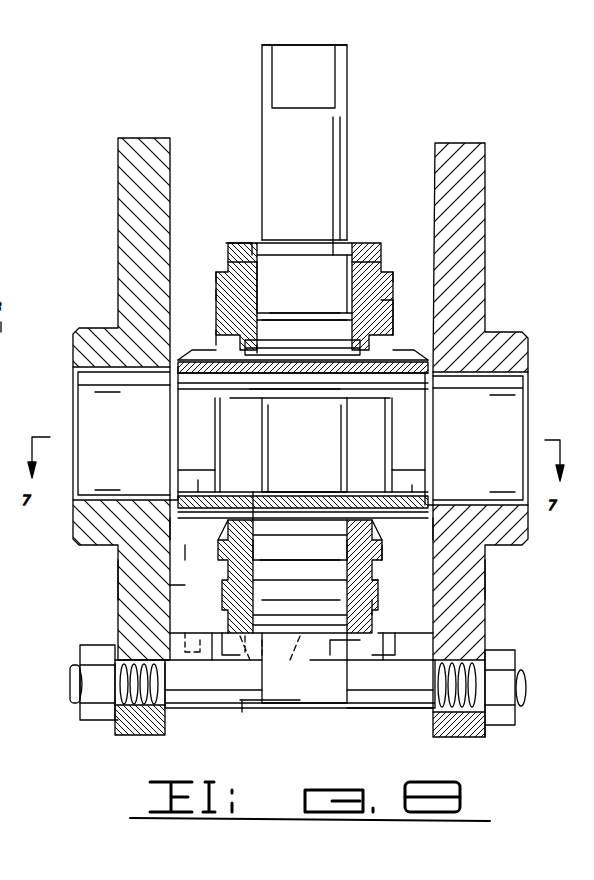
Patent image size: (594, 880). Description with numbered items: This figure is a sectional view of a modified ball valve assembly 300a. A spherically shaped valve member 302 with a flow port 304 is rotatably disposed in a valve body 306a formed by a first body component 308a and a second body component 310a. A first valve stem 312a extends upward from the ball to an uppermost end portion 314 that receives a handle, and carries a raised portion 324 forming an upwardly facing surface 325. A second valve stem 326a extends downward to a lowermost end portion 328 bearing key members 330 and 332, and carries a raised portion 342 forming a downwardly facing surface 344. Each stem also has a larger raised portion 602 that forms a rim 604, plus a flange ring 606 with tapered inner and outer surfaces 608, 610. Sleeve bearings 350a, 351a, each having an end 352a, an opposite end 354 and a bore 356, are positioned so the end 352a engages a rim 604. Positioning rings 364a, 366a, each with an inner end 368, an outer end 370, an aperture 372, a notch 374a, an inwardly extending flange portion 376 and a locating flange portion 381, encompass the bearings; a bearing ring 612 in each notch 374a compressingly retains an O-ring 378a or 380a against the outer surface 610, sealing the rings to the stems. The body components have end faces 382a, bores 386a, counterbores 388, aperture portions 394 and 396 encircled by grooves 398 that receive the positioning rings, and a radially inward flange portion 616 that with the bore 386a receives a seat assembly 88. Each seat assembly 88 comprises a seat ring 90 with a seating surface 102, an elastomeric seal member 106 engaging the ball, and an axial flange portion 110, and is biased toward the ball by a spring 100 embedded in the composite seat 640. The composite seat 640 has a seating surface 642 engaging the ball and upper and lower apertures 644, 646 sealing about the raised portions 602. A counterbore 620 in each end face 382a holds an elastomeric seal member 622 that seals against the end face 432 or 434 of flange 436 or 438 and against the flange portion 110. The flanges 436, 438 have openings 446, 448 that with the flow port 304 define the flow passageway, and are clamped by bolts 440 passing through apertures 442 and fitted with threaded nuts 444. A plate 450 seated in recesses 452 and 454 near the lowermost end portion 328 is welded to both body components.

The valve assembly 300a is at (410, 95).
The uppermost end portion 314 is at (282, 68).
The first valve stem 312a is at (262, 128).
The upper housing body 306a is at (420, 213).
The first body component 308a is at (172, 618).
The second body component 310a is at (485, 596).
The valve member 302 is at (300, 406).
The flow port 304 is at (310, 402).
The raised portion 324 is at (283, 240).
The upwardly facing surface 325 is at (325, 245).
The second valve stem 326a is at (355, 688).
The lowermost end portion 328 is at (310, 710).
The key member 330 is at (247, 712).
The key member 332 is at (325, 660).
The raised portion 342 is at (310, 600).
The downwardly facing surface 344 is at (285, 660).
The sleeve bearing 350a is at (420, 214).
The sleeve bearing 351a is at (426, 635).
The end 352a is at (225, 316).
The end 354 is at (255, 243).
The bore 356 is at (283, 245).
The positioning ring 364a is at (238, 215).
The positioning ring 366a is at (238, 656).
The inner end 368 is at (245, 492).
The outer end 370 is at (245, 243).
The aperture 372 is at (385, 278).
The notch 374a is at (385, 304).
The flange portion 376 is at (352, 243).
The O-ring 378a is at (230, 335).
The O-ring 380a is at (185, 552).
The flange portion 381 is at (222, 277).
The end face 382a is at (118, 584).
The bore 386a is at (195, 470).
The counterbore 388 is at (220, 540).
The aperture portion 394 is at (228, 260).
The aperture portion 396 is at (222, 605).
The groove 398 is at (218, 295).
The end face 432 is at (165, 740).
The end face 434 is at (433, 740).
The flange 436 is at (115, 730).
The flange 438 is at (485, 740).
The bolt 440 is at (356, 712).
The aperture 442 is at (115, 690).
The threaded nut 444 is at (92, 652).
The opening 446 is at (78, 386).
The opening 448 is at (523, 381).
The plate 450 is at (222, 648).
The recess 452 is at (190, 640).
The recess 454 is at (430, 648).
The seat assembly 88 is at (198, 480).
The seat ring 90 is at (172, 387).
The spring 100 is at (175, 530).
The seating surface 102 is at (380, 492).
The elastomeric seal member 106 is at (220, 490).
The flange portion 110 is at (192, 360).
The raised portion 602 is at (302, 318).
The rim 604 is at (325, 313).
The flange ring 606 is at (332, 348).
The inner surface 608 is at (277, 398).
The outer surface 610 is at (272, 313).
The bearing ring 612 is at (385, 326).
The flange portion 616 is at (190, 478).
The counterbore 620 is at (175, 518).
The elastomeric seal member 622 is at (175, 495).
The composite seat 640 is at (272, 492).
The seating surface 642 is at (362, 492).
The upper aperture 644 is at (270, 385).
The lower aperture 646 is at (276, 492).